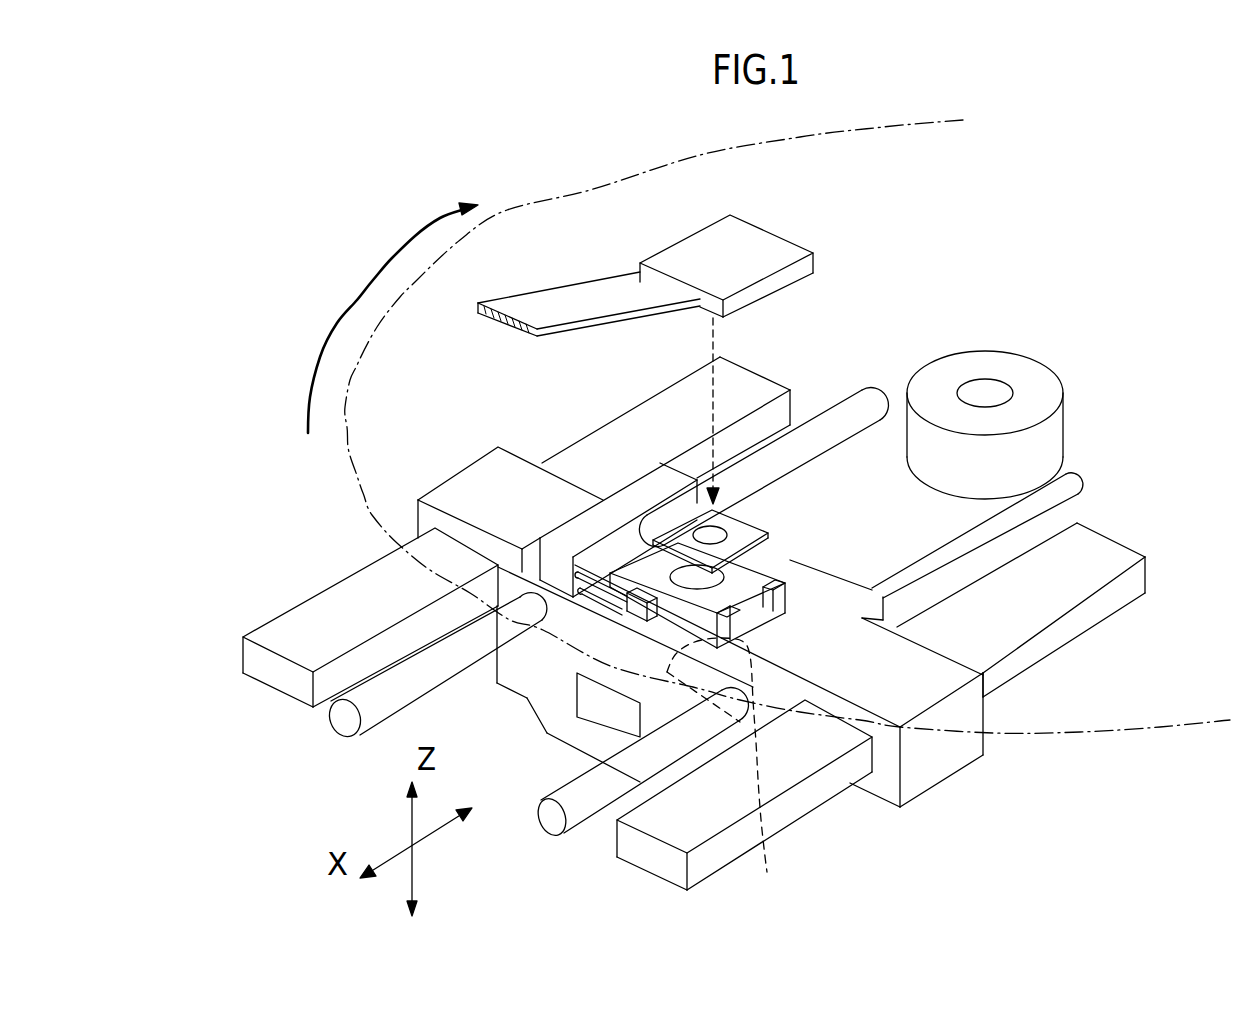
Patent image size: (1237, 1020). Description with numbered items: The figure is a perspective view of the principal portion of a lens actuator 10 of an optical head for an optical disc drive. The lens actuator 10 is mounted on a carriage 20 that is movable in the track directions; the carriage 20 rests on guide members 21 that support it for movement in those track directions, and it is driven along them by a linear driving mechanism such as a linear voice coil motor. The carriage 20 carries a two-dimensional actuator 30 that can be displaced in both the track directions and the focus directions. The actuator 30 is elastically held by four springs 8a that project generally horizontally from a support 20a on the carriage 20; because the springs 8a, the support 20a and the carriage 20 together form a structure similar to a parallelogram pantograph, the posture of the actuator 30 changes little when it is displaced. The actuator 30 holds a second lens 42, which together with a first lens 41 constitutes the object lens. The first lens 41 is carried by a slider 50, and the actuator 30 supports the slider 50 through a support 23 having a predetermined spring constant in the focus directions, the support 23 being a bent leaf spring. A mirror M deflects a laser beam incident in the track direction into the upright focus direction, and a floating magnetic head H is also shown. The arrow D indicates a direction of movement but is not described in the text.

The lens actuator 10 is at (858, 812).
The carriage 20 is at (940, 668).
The support 20a is at (643, 492).
The guide members 21 is at (376, 705).
The support 23 is at (742, 522).
The two-dimensional actuator 30 is at (770, 557).
The first lens 41 is at (718, 534).
The second lens 42 is at (705, 582).
The slider 50 is at (720, 520).
The springs 8a is at (598, 612).
The floating magnetic head H is at (777, 250).
The rotation direction D is at (590, 192).
The mirror M is at (727, 778).